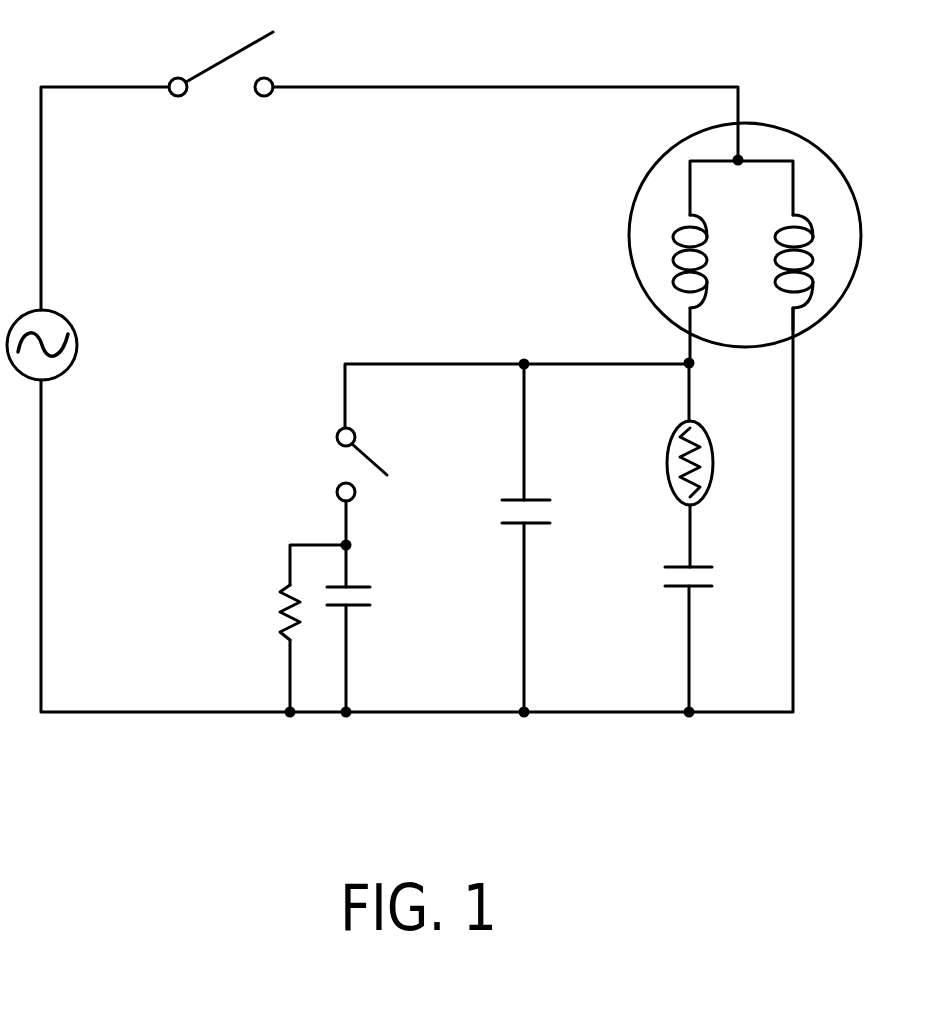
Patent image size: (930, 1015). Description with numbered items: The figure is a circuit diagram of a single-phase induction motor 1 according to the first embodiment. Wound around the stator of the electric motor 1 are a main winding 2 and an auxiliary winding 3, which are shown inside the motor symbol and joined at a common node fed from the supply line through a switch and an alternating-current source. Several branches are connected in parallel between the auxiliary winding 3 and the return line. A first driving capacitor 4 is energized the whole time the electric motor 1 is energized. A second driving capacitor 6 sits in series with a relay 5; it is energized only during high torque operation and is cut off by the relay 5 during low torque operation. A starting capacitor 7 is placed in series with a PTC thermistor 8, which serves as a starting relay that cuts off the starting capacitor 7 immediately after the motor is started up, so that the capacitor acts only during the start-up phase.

The single-phase induction motor 1 is at (753, 236).
The main winding 2 is at (802, 217).
The auxiliary winding 3 is at (698, 215).
The first driving capacitor 4 is at (542, 498).
The relay 5 is at (375, 458).
The second driving capacitor 6 is at (370, 593).
The starting capacitor 7 is at (700, 567).
The PTC thermistor 8 is at (698, 422).